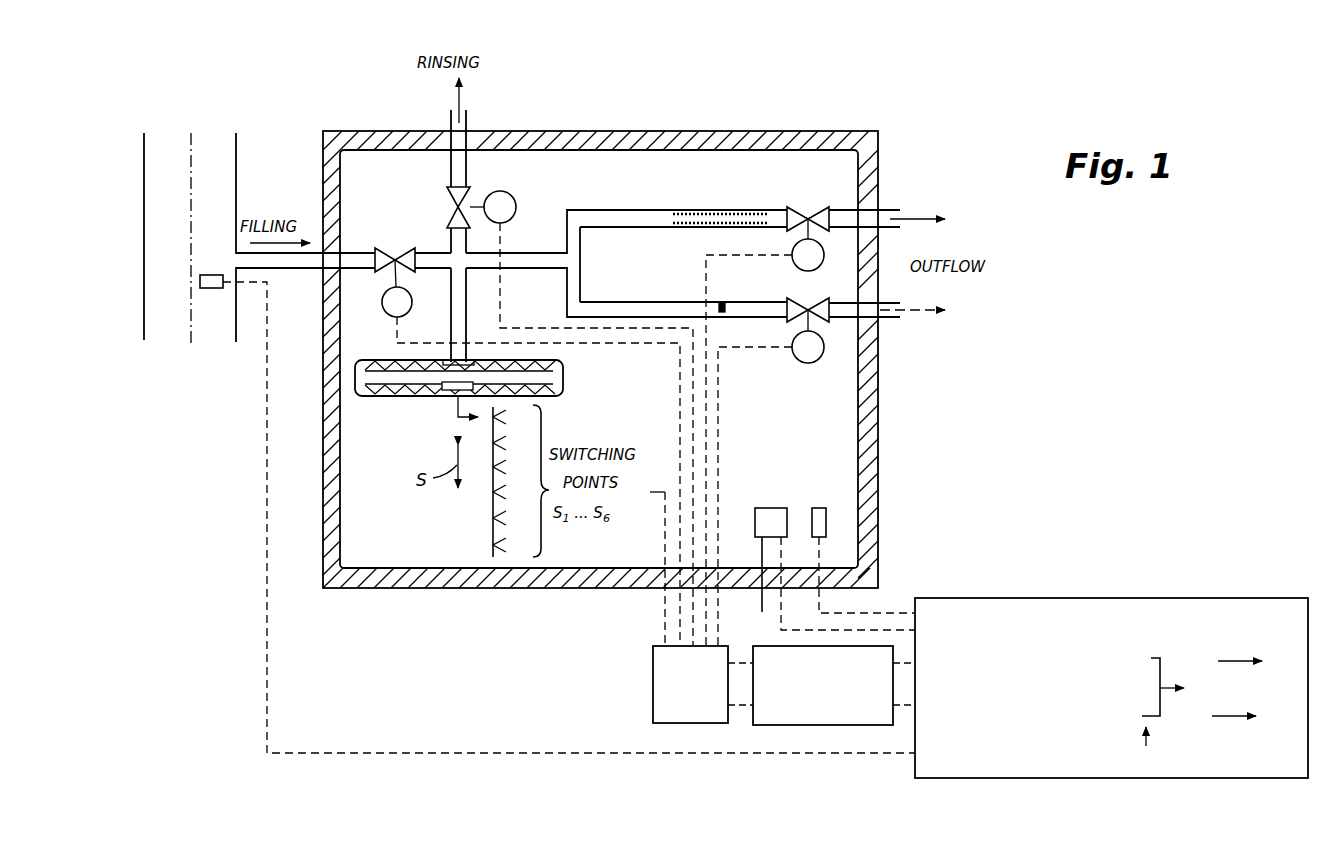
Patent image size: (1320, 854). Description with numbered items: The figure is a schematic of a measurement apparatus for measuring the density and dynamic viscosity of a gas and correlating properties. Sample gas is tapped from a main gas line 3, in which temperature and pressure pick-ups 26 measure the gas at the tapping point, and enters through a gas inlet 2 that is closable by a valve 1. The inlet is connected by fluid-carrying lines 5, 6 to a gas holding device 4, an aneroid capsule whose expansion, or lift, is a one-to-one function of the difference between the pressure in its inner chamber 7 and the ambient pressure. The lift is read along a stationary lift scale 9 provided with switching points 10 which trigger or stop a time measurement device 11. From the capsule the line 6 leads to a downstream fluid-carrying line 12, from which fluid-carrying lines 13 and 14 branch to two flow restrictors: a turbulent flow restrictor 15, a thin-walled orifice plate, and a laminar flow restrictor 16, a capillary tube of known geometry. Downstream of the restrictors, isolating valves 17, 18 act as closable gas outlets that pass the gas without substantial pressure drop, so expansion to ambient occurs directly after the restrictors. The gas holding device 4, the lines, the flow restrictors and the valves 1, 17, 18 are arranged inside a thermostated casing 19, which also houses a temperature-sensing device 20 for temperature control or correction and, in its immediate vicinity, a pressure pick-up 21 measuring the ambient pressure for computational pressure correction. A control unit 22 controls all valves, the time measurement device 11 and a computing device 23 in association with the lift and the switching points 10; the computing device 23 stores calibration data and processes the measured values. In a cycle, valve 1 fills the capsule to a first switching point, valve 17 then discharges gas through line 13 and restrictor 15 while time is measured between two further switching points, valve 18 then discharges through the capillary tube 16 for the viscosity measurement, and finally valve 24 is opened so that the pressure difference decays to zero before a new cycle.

The valve 1 is at (387, 248).
The gas inlet 2 is at (313, 280).
The main gas line 3 is at (236, 152).
The gas holding device 4 is at (357, 396).
The fluid-carrying line 5 is at (430, 251).
The fluid-carrying line 6 is at (448, 312).
The inner chamber 7 is at (455, 378).
The lift scale 9 is at (493, 527).
The switching points 10 is at (529, 562).
The time measurement device 11 is at (760, 646).
The fluid-carrying line 12 is at (527, 252).
The fluid-carrying line 13 is at (615, 302).
The fluid-carrying line 14 is at (610, 210).
The flow restrictor 15 is at (725, 303).
The flow restrictor 16 is at (695, 212).
The valve 17 is at (797, 302).
The valve 18 is at (797, 208).
The thermostated casing 19 is at (750, 131).
The temperature-sensing device 20 is at (768, 508).
The pressure pick-up 21 is at (818, 508).
The control unit 22 is at (653, 684).
The computing device 23 is at (1010, 597).
The valve 24 is at (447, 194).
The temperature and pressure pick-ups 26 is at (208, 288).